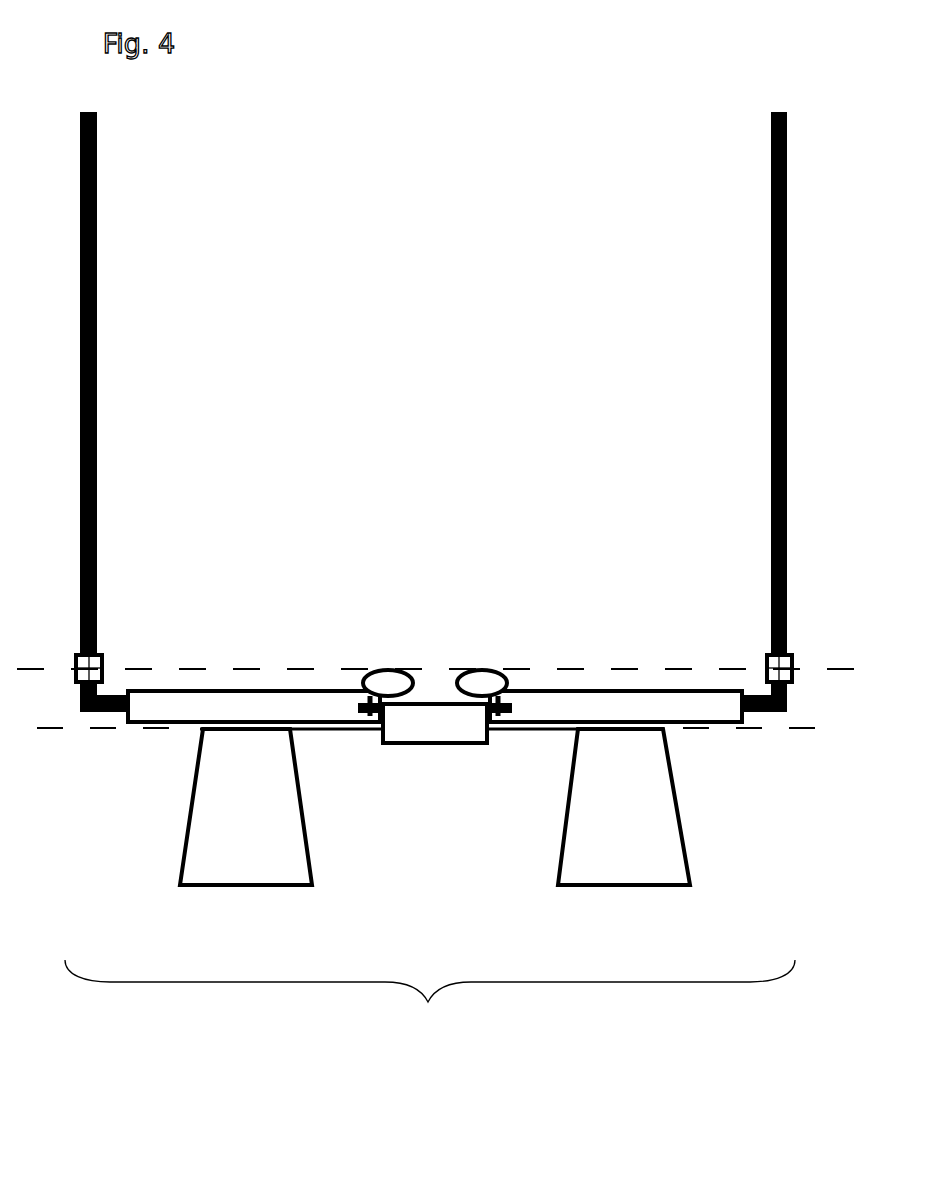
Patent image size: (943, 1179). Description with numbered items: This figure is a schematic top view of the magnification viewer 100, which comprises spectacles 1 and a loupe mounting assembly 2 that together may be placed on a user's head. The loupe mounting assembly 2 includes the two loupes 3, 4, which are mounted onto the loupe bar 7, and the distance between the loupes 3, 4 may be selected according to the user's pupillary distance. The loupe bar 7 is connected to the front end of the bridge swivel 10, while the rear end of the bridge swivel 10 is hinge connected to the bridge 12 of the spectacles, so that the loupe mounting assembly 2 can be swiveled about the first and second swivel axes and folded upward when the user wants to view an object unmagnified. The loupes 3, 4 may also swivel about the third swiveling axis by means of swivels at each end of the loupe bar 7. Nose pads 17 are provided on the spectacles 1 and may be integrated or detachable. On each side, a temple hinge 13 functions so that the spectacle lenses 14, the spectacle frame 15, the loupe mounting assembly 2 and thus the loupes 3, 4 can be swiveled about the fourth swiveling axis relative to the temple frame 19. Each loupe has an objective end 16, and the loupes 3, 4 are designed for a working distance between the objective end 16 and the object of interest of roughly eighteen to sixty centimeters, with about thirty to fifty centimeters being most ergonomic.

The spectacles 1 is at (258, 655).
The loupe mounting assembly 2 is at (435, 765).
The loupe 3 is at (281, 878).
The loupe 4 is at (662, 865).
The loupe bar 7 is at (338, 733).
The bridge swivel 10 is at (430, 735).
The bridge 12 is at (356, 706).
The temple hinge 13 is at (102, 658).
The spectacle lenses 14 is at (153, 723).
The spectacle frame 15 is at (92, 713).
The objective end 16 is at (203, 892).
The nose pads 17 is at (375, 669).
The temple frame 19 is at (97, 560).
The magnification viewer 100 is at (430, 991).